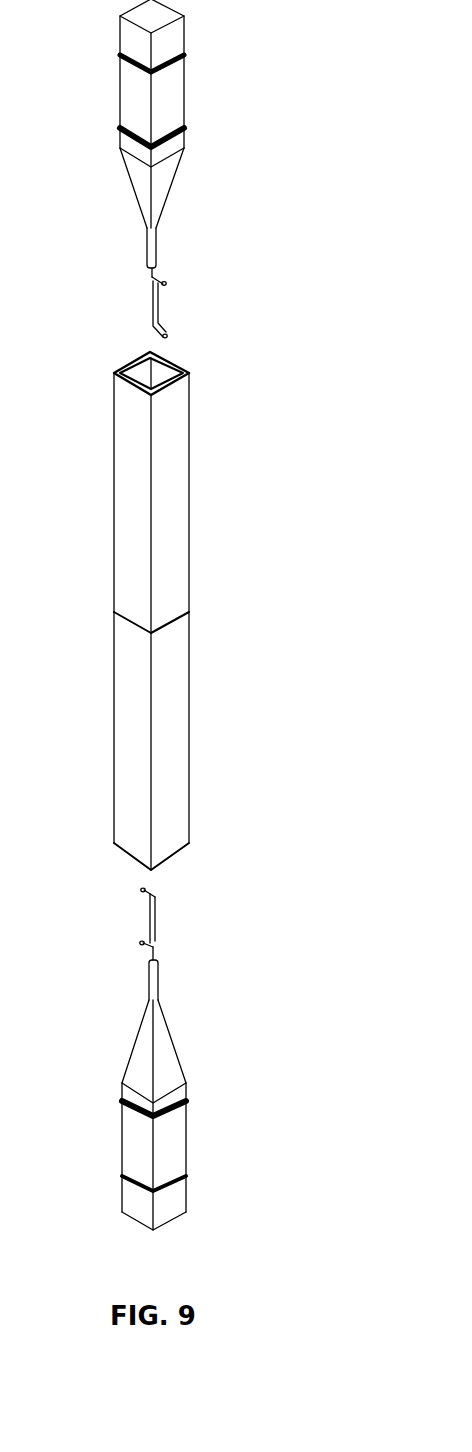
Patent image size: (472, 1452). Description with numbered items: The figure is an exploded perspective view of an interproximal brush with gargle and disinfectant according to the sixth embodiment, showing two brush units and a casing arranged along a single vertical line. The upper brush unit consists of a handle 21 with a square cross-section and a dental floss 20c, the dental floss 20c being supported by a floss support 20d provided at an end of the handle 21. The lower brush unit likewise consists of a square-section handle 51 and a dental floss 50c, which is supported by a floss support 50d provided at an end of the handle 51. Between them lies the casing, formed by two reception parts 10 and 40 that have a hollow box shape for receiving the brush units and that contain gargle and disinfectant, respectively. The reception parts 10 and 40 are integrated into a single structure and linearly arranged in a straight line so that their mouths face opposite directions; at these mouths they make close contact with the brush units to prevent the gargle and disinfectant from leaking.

The handle 21 is at (168, 99).
The floss support 20d is at (155, 277).
The dental floss 20c is at (165, 303).
The reception part 10 is at (175, 505).
The reception part 40 is at (168, 740).
The dental floss 50c is at (142, 906).
The floss support 50d is at (157, 945).
The handle 51 is at (168, 1135).